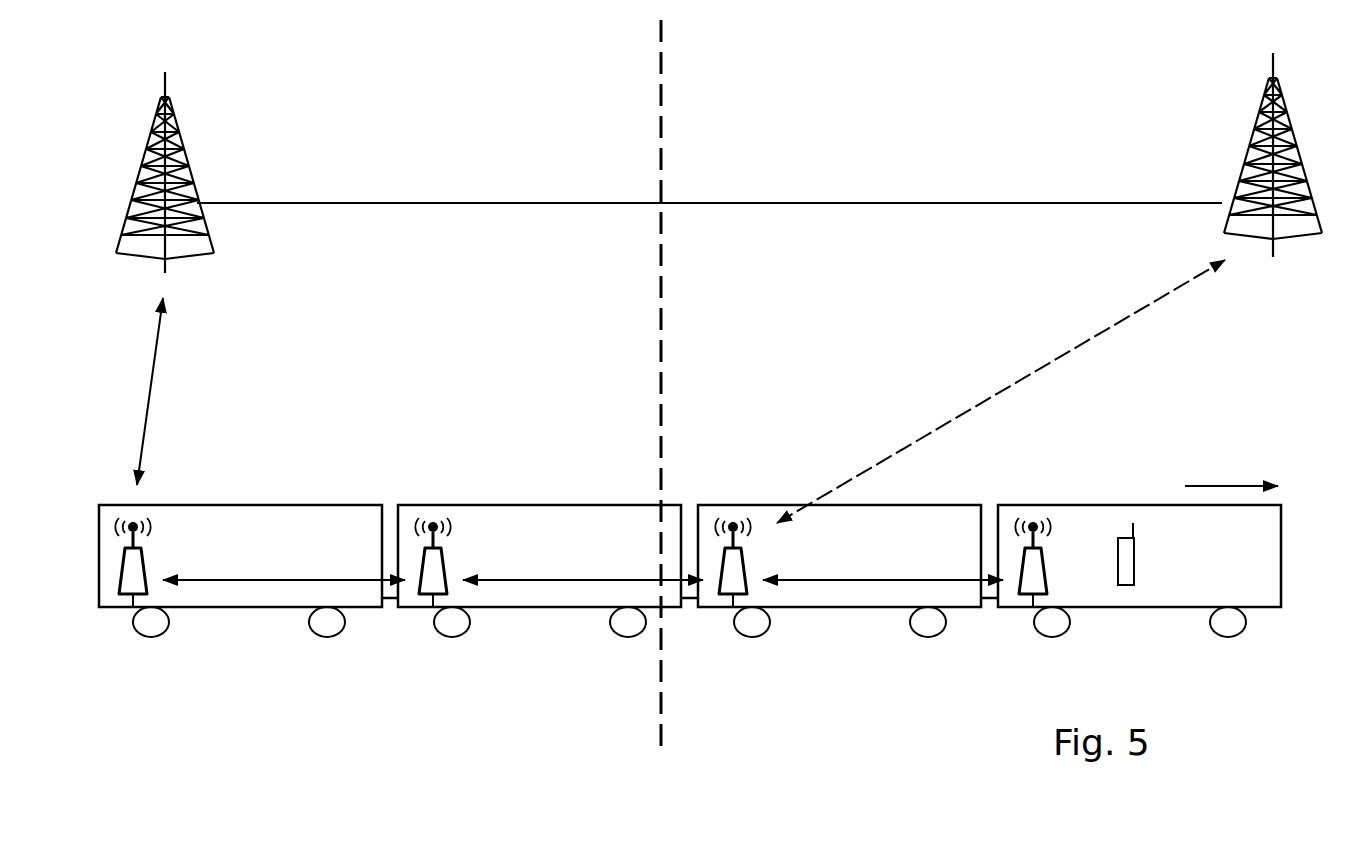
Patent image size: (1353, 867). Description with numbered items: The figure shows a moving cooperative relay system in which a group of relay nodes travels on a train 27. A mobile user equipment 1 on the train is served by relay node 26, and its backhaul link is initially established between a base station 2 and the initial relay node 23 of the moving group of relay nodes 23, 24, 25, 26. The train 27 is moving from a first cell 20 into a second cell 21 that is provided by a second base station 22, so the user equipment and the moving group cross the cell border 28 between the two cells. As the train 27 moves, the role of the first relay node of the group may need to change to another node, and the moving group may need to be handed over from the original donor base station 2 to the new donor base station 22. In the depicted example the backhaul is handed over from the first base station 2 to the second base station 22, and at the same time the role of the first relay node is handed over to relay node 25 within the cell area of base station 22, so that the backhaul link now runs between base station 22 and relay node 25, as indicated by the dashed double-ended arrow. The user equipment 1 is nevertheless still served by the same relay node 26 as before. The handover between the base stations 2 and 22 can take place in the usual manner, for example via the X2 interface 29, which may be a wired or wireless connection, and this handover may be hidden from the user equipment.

The mobile user equipment 1 is at (1127, 573).
The base station 2 is at (192, 185).
The cell 20 is at (318, 153).
The cell 21 is at (935, 153).
The second base station 22 is at (1277, 207).
The initial relay node 23 is at (132, 600).
The relay node 24 is at (433, 600).
The relay node 25 is at (733, 600).
The relay node 26 is at (1033, 600).
The train 27 is at (283, 607).
The cell border 28 is at (660, 155).
The X2 interface 29 is at (490, 203).